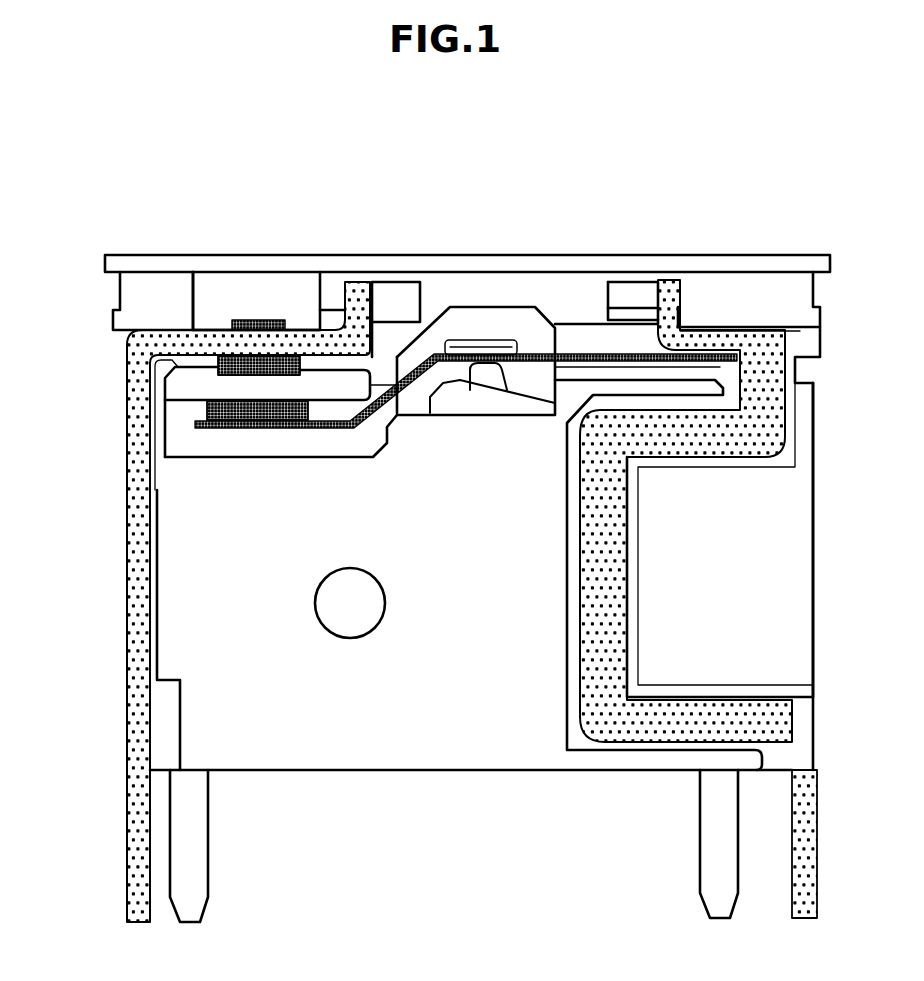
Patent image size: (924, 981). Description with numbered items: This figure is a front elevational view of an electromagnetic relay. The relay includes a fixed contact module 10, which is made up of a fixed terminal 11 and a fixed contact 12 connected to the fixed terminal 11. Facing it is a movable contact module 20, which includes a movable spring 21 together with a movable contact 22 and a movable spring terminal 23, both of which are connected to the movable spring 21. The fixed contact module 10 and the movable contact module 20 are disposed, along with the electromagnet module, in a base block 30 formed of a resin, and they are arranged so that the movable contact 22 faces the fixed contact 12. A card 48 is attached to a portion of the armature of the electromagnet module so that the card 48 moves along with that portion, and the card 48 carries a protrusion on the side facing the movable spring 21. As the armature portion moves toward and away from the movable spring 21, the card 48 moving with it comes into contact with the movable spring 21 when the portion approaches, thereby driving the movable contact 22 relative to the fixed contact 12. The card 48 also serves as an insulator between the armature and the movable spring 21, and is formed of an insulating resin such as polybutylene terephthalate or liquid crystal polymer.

The fixed contact module 10 is at (148, 187).
The fixed terminal 11 is at (165, 340).
The fixed contact 12 is at (258, 364).
The movable contact module 20 is at (398, 187).
The movable spring 21 is at (577, 355).
The movable contact 22 is at (290, 407).
The movable spring terminal 23 is at (648, 415).
The base block 30 is at (712, 252).
The card 48 is at (462, 410).